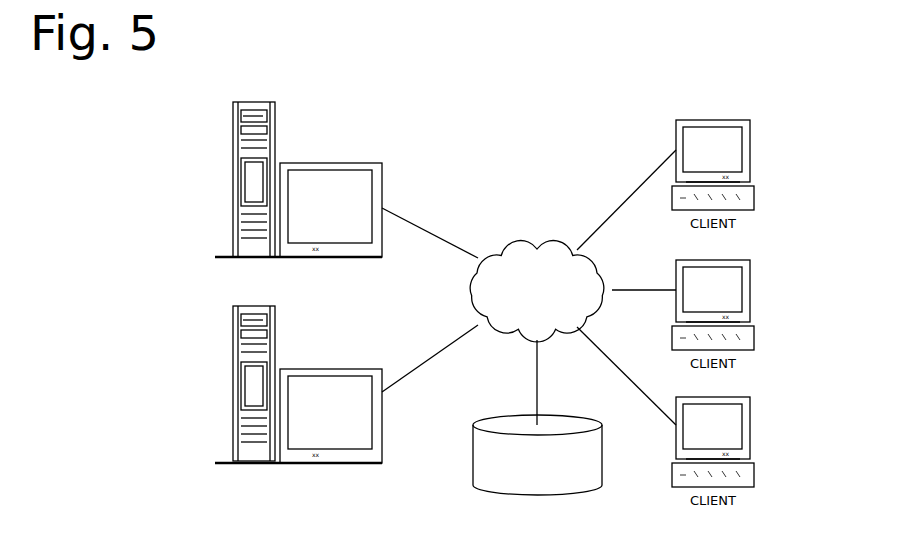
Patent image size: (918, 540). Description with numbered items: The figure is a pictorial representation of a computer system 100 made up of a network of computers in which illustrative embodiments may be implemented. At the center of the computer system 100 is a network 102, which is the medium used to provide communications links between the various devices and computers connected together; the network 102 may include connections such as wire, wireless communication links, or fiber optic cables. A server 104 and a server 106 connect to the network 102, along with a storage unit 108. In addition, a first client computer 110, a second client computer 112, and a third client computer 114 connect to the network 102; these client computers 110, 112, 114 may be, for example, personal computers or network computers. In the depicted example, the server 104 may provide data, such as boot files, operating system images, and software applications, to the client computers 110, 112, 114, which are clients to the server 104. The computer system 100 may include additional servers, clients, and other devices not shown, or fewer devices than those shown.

The computer system 100 is at (588, 136).
The network 102 is at (510, 242).
The server 104 is at (232, 183).
The server 106 is at (232, 388).
The storage unit 108 is at (470, 470).
The first client computer 110 is at (752, 150).
The second client computer 112 is at (752, 291).
The third client computer 114 is at (752, 430).